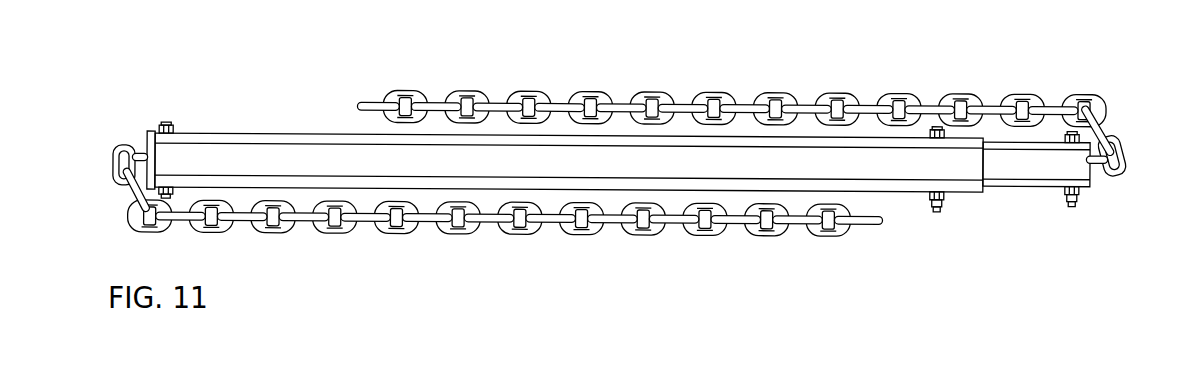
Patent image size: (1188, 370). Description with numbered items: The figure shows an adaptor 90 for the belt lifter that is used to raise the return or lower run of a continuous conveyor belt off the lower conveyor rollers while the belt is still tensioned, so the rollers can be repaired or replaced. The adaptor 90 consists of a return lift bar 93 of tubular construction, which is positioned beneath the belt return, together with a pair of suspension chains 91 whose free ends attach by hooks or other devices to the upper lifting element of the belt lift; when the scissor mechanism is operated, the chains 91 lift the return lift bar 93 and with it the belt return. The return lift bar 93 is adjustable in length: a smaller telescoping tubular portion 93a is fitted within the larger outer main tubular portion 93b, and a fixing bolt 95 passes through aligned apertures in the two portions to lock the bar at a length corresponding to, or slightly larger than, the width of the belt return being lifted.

The adaptor 90 is at (631, 158).
The suspension chains 91 is at (890, 95).
The return lift bar 93 is at (630, 199).
The telescoping tubular portion 93a is at (1070, 163).
The outer main tubular portion 93b is at (853, 172).
The fixing bolt 95 is at (938, 213).